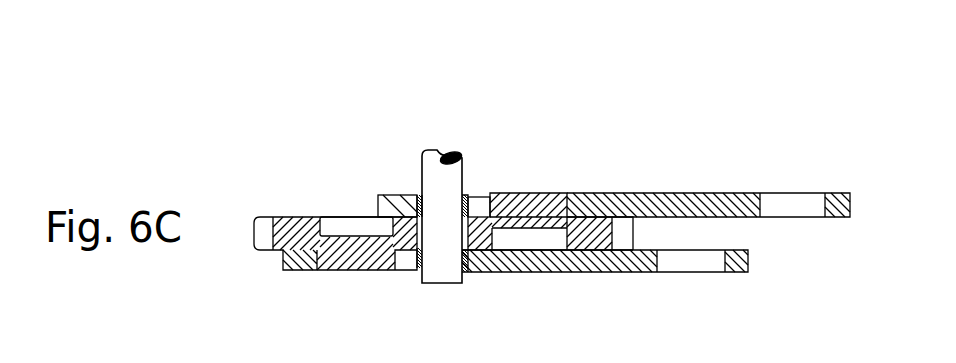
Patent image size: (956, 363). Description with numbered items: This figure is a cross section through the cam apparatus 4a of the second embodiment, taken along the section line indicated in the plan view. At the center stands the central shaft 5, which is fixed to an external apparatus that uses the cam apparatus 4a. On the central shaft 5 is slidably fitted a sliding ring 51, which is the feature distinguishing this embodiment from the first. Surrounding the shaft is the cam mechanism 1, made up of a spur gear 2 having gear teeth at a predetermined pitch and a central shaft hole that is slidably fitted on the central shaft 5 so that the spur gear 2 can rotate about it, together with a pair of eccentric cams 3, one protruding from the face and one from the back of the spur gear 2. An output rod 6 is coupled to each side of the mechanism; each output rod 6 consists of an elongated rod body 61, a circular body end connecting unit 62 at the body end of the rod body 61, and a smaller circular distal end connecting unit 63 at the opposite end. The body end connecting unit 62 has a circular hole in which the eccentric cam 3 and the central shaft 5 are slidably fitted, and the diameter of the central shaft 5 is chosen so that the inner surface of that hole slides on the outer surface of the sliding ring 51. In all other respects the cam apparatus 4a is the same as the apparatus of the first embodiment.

The cam apparatus 4a is at (650, 122).
The central shaft 5 is at (446, 149).
The sliding ring 51 is at (466, 194).
The body end connecting unit 62 is at (392, 195).
The eccentric cam 3 is at (553, 193).
The spur gear 2 is at (594, 222).
The cam mechanism 1 is at (615, 147).
The rod body 61 is at (674, 195).
The distal end connecting unit 63 is at (834, 195).
The output rod 6 is at (850, 203).